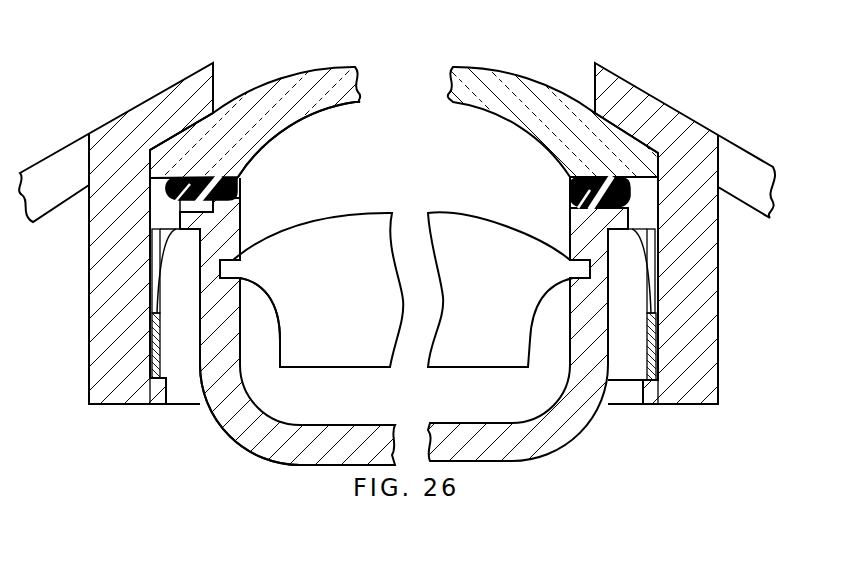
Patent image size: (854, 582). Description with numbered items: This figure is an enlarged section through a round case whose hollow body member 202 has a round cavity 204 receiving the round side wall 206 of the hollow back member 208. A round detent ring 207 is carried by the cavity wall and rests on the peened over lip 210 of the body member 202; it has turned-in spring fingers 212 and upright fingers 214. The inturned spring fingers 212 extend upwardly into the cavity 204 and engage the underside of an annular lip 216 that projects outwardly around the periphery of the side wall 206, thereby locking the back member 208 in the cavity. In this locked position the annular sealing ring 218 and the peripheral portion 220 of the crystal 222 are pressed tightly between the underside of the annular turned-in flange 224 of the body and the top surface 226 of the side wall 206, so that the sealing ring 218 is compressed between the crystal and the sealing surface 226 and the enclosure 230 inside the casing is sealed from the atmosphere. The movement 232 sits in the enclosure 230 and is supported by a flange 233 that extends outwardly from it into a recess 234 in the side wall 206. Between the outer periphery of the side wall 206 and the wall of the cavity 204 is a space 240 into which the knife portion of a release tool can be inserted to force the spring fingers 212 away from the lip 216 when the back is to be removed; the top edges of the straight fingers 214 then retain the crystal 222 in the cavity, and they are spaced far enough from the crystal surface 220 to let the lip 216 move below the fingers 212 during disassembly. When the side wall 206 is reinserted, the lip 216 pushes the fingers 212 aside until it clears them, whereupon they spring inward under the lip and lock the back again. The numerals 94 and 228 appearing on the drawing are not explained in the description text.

The base corner 94 is at (91, 405).
The hollow body member 202 is at (84, 287).
The cavity 204 is at (150, 204).
The side wall 206 is at (218, 317).
The detent ring 207 is at (178, 280).
The hollow back member 208 is at (270, 462).
The peened over lip 210 is at (160, 393).
The turned-in spring fingers 212 is at (162, 252).
The upright fingers 214 is at (156, 240).
The annular lip 216 is at (150, 160).
The annular sealing ring 218 is at (218, 177).
The peripheral portion of the crystal 220 is at (197, 177).
The crystal 222 is at (330, 73).
The annular turned-in flange 224 is at (210, 127).
The top surface of side wall 226 is at (208, 212).
The ring shoulder 228 is at (176, 177).
The enclosure 230 is at (478, 135).
The movement 232 is at (348, 233).
The flange 233 is at (229, 262).
The recess 234 is at (260, 285).
The space 240 is at (185, 312).